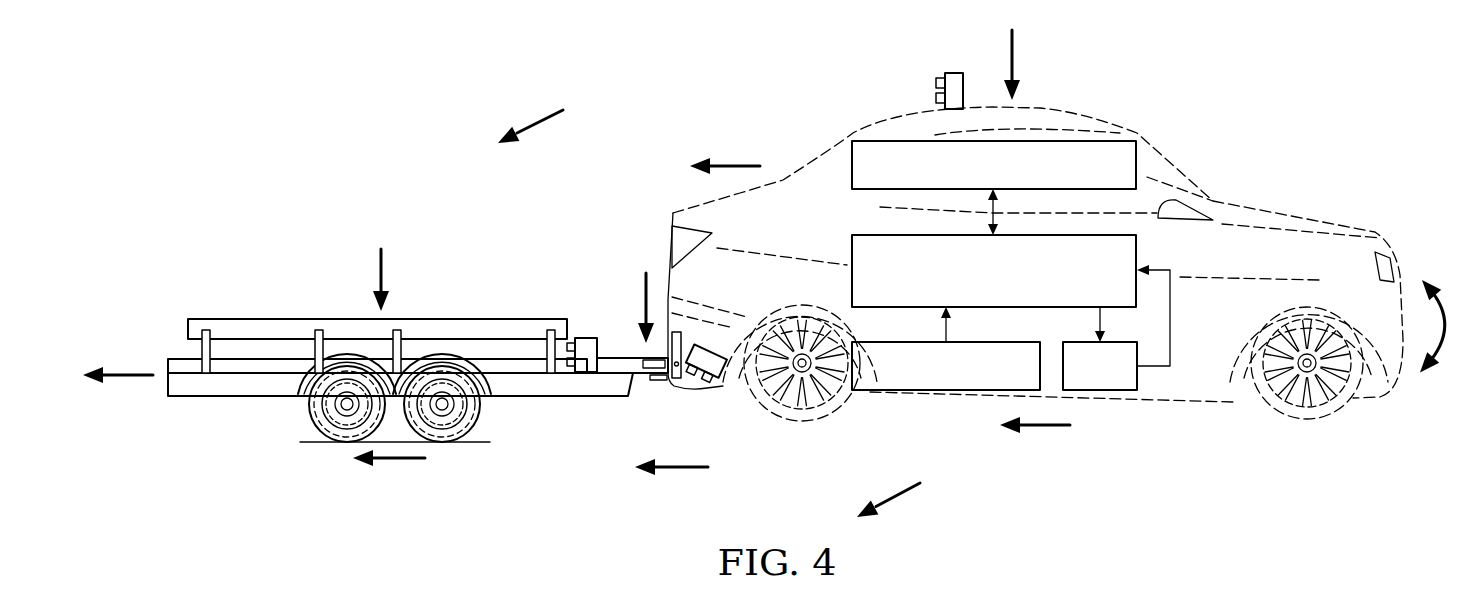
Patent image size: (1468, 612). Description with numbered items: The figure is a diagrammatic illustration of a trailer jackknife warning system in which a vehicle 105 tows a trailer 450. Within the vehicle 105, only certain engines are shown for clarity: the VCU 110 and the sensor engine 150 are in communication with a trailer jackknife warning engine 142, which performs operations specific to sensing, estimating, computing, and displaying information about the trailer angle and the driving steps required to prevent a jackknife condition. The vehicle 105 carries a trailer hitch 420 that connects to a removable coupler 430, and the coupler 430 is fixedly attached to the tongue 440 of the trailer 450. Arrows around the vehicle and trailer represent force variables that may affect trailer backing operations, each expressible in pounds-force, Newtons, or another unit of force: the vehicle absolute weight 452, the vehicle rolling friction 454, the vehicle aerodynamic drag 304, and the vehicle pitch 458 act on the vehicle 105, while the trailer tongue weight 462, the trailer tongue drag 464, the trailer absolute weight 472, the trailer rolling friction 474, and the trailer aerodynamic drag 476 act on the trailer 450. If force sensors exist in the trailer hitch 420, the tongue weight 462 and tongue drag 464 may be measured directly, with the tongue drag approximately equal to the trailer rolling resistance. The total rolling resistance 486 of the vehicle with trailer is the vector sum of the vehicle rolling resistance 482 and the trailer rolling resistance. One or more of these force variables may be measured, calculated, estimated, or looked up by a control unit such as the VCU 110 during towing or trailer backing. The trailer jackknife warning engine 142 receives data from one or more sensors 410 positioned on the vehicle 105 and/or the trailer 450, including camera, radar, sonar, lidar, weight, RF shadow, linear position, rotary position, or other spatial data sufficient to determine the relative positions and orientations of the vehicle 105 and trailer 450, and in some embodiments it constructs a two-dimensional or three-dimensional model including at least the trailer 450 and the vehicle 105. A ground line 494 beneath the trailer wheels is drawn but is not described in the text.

The vehicle 105 is at (1157, 134).
The VCU 110 is at (884, 140).
The trailer jackknife warning engine 142 is at (1138, 260).
The sensor engine 150 is at (932, 392).
The vehicle aerodynamic drag 304 is at (732, 163).
The sensors 410 is at (952, 72).
The trailer hitch 420 is at (672, 383).
The removable coupler 430 is at (624, 356).
The tongue 440 is at (546, 397).
The trailer 450 is at (268, 312).
The vehicle absolute weight 452 is at (1015, 60).
The vehicle rolling friction 454 is at (1040, 432).
The vehicle pitch 458 is at (1444, 280).
The trailer tongue weight 462 is at (643, 295).
The trailer tongue drag 464 is at (680, 471).
The trailer absolute weight 472 is at (378, 272).
The trailer rolling friction 474 is at (400, 463).
The trailer aerodynamic drag 476 is at (128, 372).
The vehicle rolling resistance 482 is at (895, 500).
The total rolling resistance 486 is at (530, 120).
The road surface 494 is at (318, 446).